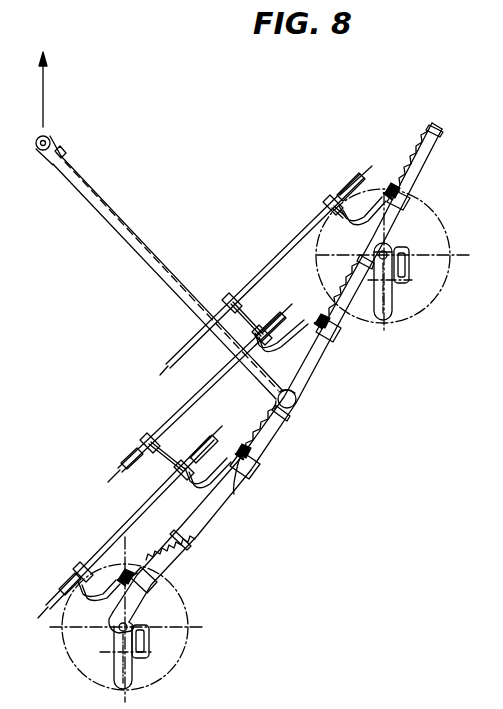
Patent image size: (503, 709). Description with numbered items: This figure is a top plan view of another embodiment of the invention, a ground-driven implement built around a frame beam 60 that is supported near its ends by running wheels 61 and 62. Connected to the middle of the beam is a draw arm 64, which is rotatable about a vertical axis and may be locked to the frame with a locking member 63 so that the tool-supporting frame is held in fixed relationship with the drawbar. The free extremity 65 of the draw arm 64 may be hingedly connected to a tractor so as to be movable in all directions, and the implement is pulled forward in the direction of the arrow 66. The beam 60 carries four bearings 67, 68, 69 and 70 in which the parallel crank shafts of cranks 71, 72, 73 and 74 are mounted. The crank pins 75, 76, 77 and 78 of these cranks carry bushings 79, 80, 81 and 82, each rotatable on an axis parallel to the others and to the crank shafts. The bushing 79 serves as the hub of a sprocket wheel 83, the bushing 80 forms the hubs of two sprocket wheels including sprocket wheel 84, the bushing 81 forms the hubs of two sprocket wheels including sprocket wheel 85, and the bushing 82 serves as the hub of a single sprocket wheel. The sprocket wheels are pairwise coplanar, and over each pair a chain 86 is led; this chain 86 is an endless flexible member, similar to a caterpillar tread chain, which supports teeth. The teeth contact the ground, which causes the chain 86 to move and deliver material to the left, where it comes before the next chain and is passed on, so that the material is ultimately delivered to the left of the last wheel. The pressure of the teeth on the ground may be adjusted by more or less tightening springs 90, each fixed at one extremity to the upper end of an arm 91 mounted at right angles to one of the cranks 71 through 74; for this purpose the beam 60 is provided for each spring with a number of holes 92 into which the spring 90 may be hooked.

The frame beam 60 is at (243, 503).
The running wheel 61 is at (394, 314).
The running wheel 62 is at (133, 688).
The locking member 63 is at (297, 406).
The draw arm 64 is at (137, 251).
The free extremity 65 is at (50, 141).
The arrow 66 is at (44, 90).
The bearing 67 is at (411, 199).
The bearing 68 is at (337, 338).
The bearing 69 is at (261, 470).
The bearing 70 is at (158, 593).
The crank 71 is at (385, 201).
The crank 72 is at (312, 327).
The crank 73 is at (236, 462).
The crank 74 is at (118, 577).
The crank pin 75 is at (350, 226).
The crank pin 76 is at (262, 352).
The crank pin 77 is at (194, 488).
The crank pin 78 is at (95, 600).
The bushing 79 is at (354, 186).
The bushing 80 is at (257, 327).
The bushing 81 is at (174, 452).
The bushing 82 is at (77, 571).
The sprocket wheel 83 is at (326, 205).
The sprocket wheel 84 is at (243, 344).
The sprocket wheel 85 is at (174, 475).
The chain 86 is at (299, 240).
The spring 90 is at (408, 166).
The arm 91 is at (396, 201).
The hole 92 is at (432, 130).